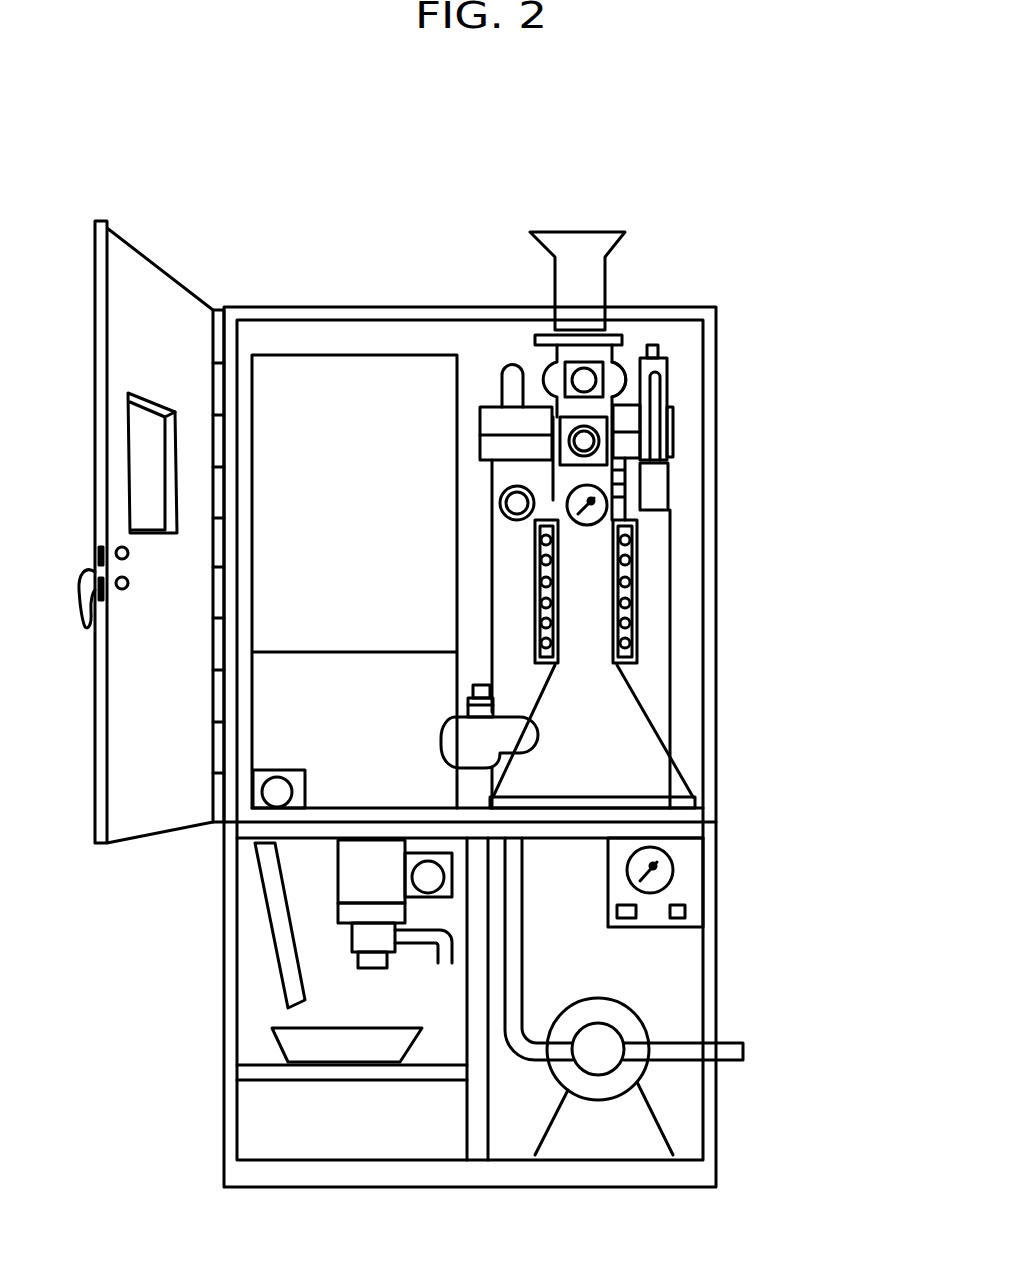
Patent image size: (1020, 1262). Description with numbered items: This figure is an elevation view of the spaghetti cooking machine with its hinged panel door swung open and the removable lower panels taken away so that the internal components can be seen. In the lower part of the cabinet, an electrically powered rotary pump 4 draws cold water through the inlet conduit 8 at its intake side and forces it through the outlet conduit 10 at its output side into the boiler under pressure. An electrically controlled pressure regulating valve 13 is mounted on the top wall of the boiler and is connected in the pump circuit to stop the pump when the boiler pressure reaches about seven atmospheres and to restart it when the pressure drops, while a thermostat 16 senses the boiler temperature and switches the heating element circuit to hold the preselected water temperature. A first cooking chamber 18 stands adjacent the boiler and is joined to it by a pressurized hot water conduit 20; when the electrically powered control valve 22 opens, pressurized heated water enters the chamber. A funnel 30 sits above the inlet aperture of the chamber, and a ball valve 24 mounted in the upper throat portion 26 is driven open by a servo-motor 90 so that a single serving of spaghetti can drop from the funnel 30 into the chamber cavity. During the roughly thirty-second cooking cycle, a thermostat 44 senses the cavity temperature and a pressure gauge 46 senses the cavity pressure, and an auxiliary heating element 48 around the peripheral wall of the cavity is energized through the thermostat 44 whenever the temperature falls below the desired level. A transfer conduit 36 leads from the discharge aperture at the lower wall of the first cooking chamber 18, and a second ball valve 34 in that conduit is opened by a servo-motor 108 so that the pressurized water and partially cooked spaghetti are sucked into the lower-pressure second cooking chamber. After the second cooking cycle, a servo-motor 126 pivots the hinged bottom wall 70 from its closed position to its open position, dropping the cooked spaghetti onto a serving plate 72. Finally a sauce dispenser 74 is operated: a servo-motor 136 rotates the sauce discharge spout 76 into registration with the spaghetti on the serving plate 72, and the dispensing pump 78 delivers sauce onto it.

The rotary pump 4 is at (603, 1025).
The inlet conduit 8 is at (730, 1040).
The outlet conduit 10 is at (522, 970).
The pressure regulating valve 13 is at (512, 362).
The thermostat 16 is at (500, 502).
The first cooking chamber 18 is at (640, 723).
The pressurized hot water conduit 20 is at (653, 425).
The control valve 22 is at (660, 487).
The ball valve 24 is at (620, 368).
The upper throat portion 26 is at (567, 410).
The funnel 30 is at (578, 230).
The second ball valve 34 is at (465, 710).
The transfer conduit 36 is at (528, 735).
The thermostat 44 is at (572, 438).
The pressure gauge 46 is at (566, 493).
The auxiliary heating element 48 is at (636, 588).
The hinged bottom wall 70 is at (272, 962).
The serving plate 72 is at (410, 1062).
The sauce dispenser 74 is at (373, 853).
The sauce discharge spout 76 is at (424, 948).
The dispensing pump 78 is at (428, 862).
The servo-motor 90 is at (585, 372).
The servo-motor 108 is at (480, 685).
The servo-motor 126 is at (277, 783).
The servo-motor 136 is at (368, 968).